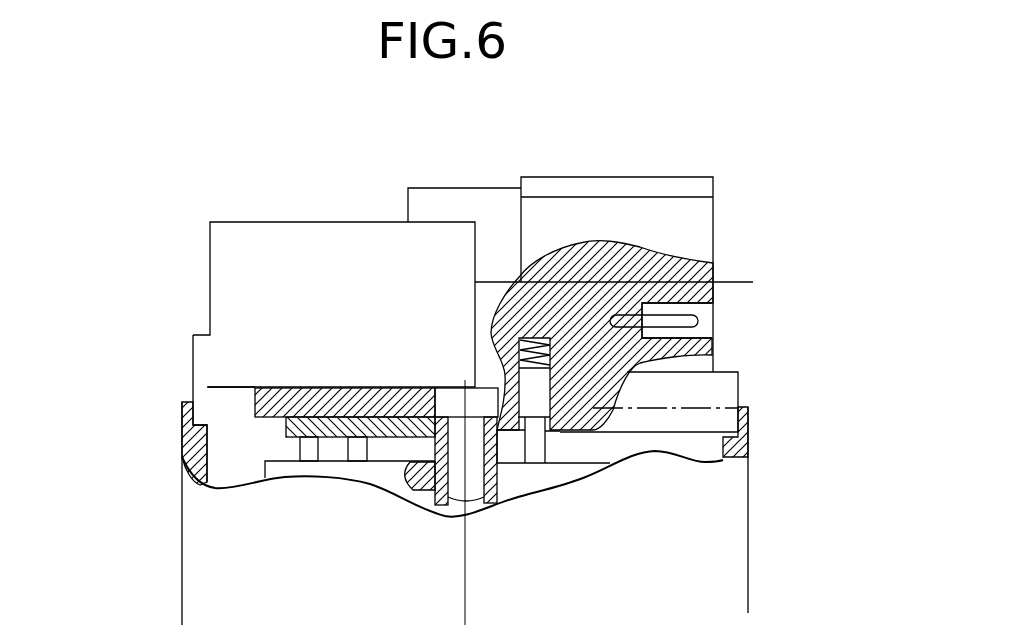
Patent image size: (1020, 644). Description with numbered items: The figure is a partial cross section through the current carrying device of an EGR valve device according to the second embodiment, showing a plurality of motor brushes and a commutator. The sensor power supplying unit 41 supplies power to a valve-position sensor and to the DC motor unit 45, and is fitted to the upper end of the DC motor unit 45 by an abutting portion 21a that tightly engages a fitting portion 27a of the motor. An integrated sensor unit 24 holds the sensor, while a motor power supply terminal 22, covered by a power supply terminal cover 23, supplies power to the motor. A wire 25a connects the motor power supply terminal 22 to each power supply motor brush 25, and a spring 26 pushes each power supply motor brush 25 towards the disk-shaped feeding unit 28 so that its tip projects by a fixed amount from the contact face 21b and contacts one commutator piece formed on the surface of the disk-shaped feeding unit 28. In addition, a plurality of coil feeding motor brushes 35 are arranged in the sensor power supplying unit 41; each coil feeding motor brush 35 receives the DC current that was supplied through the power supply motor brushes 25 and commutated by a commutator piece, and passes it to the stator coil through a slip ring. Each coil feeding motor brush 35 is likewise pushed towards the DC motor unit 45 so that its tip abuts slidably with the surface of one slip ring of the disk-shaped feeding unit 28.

The sensor power supplying unit 41 is at (122, 200).
The integrated sensor unit 24 is at (313, 278).
The spring 26 is at (517, 340).
The power supply terminal cover 23 is at (672, 177).
The wire 25a is at (578, 300).
The motor power supply terminal 22 is at (700, 320).
The contact face 21b is at (660, 432).
The power supply motor brush 25 is at (545, 440).
The abutting portion 21a is at (198, 408).
The fitting portion 27a is at (182, 435).
The coil feeding motor brush 35 is at (307, 445).
The disk-shaped feeding unit 28 is at (393, 473).
The DC motor unit 45 is at (750, 512).